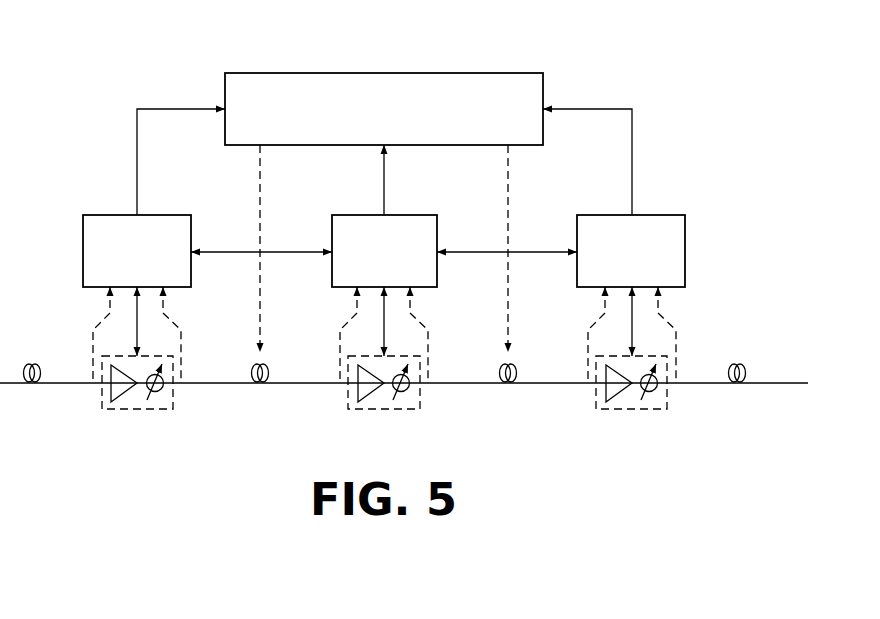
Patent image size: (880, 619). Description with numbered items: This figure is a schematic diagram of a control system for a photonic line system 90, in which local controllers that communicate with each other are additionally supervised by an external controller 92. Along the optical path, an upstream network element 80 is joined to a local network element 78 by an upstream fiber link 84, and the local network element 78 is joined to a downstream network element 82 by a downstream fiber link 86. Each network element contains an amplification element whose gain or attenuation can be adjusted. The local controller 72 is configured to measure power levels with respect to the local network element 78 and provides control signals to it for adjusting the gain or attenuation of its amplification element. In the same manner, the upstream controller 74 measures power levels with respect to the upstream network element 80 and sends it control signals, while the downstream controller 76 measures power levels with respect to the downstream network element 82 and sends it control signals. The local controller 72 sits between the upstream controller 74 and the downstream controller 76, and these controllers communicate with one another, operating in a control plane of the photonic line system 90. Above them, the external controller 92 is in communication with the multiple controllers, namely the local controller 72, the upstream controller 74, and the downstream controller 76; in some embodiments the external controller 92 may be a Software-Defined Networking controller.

The local controller 72 is at (362, 215).
The upstream controller 74 is at (83, 261).
The downstream controller 76 is at (607, 215).
The local network element 78 is at (400, 410).
The upstream network element 80 is at (133, 410).
The downstream network element 82 is at (650, 410).
The upstream fiber link 84 is at (220, 387).
The downstream fiber link 86 is at (532, 387).
The photonic line system 90 is at (145, 528).
The external controller 92 is at (338, 72).